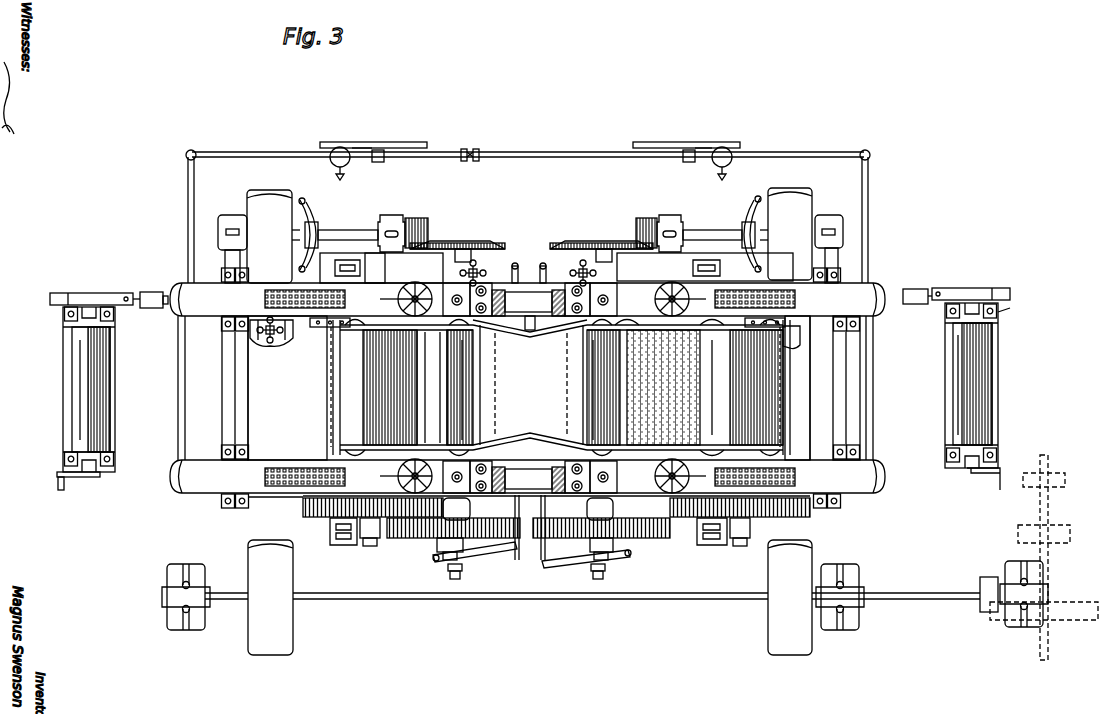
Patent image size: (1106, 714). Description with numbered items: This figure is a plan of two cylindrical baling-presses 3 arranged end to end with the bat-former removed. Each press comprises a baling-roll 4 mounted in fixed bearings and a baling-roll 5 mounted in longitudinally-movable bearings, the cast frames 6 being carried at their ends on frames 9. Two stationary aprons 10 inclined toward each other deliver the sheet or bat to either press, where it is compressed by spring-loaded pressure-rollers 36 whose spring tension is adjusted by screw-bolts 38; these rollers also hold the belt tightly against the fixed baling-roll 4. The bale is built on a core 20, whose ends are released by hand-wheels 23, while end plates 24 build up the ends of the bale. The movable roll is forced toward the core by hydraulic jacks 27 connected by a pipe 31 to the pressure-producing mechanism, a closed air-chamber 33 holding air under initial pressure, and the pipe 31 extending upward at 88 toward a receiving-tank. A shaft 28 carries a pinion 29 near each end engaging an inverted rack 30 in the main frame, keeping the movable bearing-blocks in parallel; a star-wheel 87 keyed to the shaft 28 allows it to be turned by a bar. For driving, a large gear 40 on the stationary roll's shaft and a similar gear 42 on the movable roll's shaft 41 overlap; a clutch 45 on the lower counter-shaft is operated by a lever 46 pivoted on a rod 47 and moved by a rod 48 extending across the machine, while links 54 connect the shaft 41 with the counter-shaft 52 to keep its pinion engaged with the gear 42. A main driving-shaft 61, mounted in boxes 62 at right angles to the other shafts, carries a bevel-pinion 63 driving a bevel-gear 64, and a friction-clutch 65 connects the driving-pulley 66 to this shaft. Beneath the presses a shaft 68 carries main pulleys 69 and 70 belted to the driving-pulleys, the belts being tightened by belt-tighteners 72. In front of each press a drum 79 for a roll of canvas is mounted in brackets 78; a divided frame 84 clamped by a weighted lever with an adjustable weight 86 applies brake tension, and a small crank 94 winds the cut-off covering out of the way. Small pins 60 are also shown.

The press 3 is at (529, 388).
The baling-roll 4 is at (585, 383).
The baling-roll 5 is at (564, 387).
The cast frame 6 is at (275, 501).
The frame 9 is at (541, 388).
The stationary apron 10 is at (530, 383).
The core 20 is at (418, 364).
The hand-wheel 23 is at (417, 282).
The end plate 24 is at (423, 332).
The hydraulic jack 27 is at (527, 388).
The shaft 28 is at (333, 385).
The pinion 29 is at (345, 299).
The rack 30 is at (523, 392).
The pipe 31 is at (530, 305).
The air-chamber 33 is at (350, 162).
The pressure-roller 36 is at (462, 428).
The screw-bolt 38 is at (732, 160).
The gear 40 is at (528, 534).
The shaft 41 is at (462, 508).
The gear 42 is at (553, 513).
The clutch 45 is at (525, 549).
The lever 46 is at (531, 563).
The rod 47 is at (636, 560).
The rod 48 is at (538, 529).
The counter-shaft 52 is at (385, 266).
The link 54 is at (345, 260).
The pins 60 is at (540, 268).
The main driving-shaft 61 is at (530, 227).
The box 62 is at (530, 225).
The bevel-pinion 63 is at (531, 225).
The bevel-gear 64 is at (482, 241).
The friction-clutch 65 is at (312, 218).
The driving-pulley 66 is at (529, 227).
The shaft 68 is at (592, 588).
The main pulley 69 is at (270, 597).
The main pulley 70 is at (790, 597).
The belt-tightener 72 is at (792, 346).
The bracket 78 is at (1011, 306).
The drum 79 is at (95, 378).
The divided frame 84 is at (530, 290).
The adjustable weight 86 is at (532, 298).
The star-wheel 87 is at (322, 327).
The upward extension of pipe 88 is at (470, 162).
The crank 94 is at (528, 481).